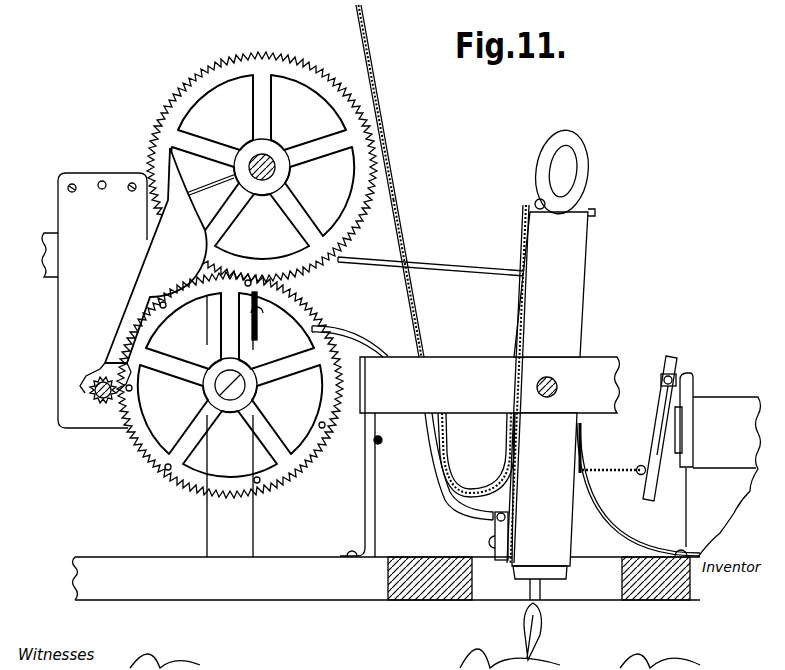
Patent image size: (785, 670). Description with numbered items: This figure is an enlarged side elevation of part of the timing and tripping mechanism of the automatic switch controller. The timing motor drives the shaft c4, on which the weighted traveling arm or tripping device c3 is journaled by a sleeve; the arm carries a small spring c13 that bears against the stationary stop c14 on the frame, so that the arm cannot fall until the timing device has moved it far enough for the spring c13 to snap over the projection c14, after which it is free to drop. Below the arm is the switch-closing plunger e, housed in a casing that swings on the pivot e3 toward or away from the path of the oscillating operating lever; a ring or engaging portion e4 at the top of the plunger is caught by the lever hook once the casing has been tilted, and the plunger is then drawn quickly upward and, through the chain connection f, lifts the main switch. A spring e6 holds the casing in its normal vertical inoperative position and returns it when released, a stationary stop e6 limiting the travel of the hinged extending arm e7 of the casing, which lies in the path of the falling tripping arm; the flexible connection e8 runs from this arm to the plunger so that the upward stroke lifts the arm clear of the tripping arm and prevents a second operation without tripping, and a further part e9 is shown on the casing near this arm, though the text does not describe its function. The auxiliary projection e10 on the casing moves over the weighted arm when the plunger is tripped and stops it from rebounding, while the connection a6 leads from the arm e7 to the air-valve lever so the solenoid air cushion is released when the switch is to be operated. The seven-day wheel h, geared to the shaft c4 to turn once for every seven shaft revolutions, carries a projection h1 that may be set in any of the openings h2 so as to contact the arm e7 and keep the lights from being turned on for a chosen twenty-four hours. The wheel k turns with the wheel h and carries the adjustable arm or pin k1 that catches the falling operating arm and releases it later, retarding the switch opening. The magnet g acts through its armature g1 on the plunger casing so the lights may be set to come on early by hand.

The arm or pin k1 is at (162, 117).
The wheel k is at (352, 118).
The connection a6 is at (415, 305).
The spring c13 is at (148, 218).
The stationary stop c14 is at (102, 180).
The traveling arm or tripping device c3 is at (158, 268).
The shaft c4 is at (97, 407).
The seven-day wheel h is at (300, 313).
The projection h1 is at (343, 335).
The openings h2 is at (322, 428).
The plunger e is at (573, 243).
The pivot e3 is at (550, 380).
The ring or engaging portion e4 is at (580, 158).
The spring e6 is at (612, 530).
The extending arm e7 is at (437, 498).
The flexible connection e8 is at (517, 320).
The pin e9 is at (380, 442).
The auxiliary projection e10 is at (455, 268).
The chain connection f is at (522, 620).
The magnet g is at (713, 410).
The armature g1 is at (667, 362).